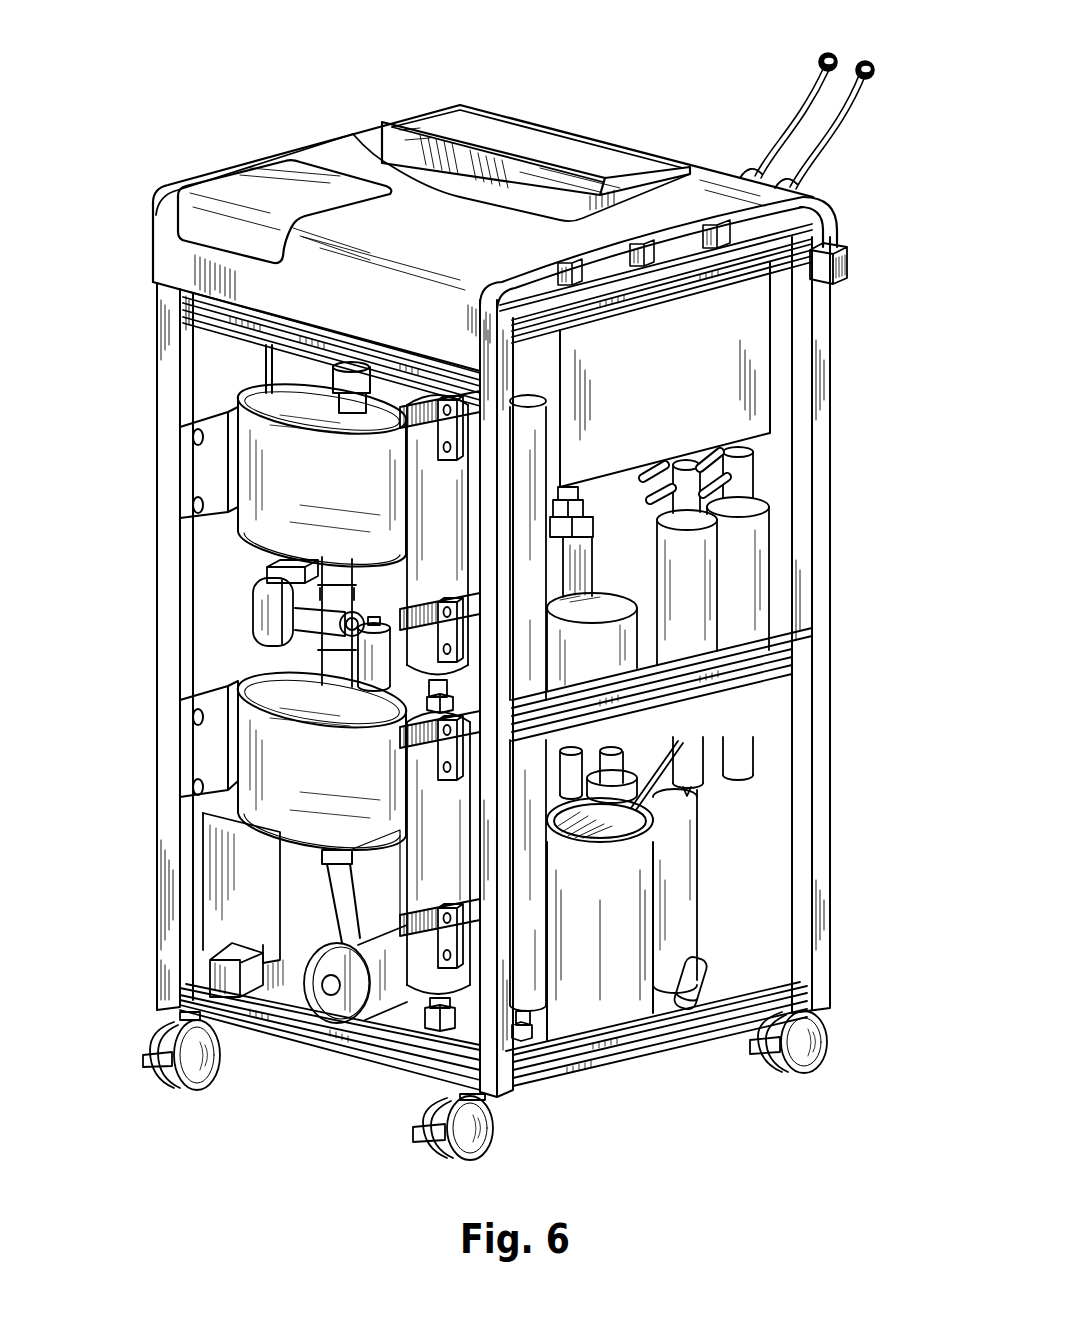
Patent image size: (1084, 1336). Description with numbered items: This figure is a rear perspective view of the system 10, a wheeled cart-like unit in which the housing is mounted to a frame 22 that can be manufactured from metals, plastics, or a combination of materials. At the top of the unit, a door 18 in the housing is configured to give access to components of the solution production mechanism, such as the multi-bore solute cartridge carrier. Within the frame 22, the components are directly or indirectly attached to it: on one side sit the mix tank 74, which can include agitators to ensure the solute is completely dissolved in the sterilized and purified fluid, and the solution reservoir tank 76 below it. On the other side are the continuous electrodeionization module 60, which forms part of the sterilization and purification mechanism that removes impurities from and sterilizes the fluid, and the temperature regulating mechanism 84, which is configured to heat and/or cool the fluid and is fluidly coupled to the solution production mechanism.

The system 10 is at (668, 80).
The door 18 is at (268, 196).
The frame 22 is at (816, 760).
The continuous electrodeionization module 60 is at (575, 957).
The mix tank 74 is at (283, 470).
The solution reservoir tank 76 is at (283, 762).
The temperature regulating mechanism 84 is at (613, 640).